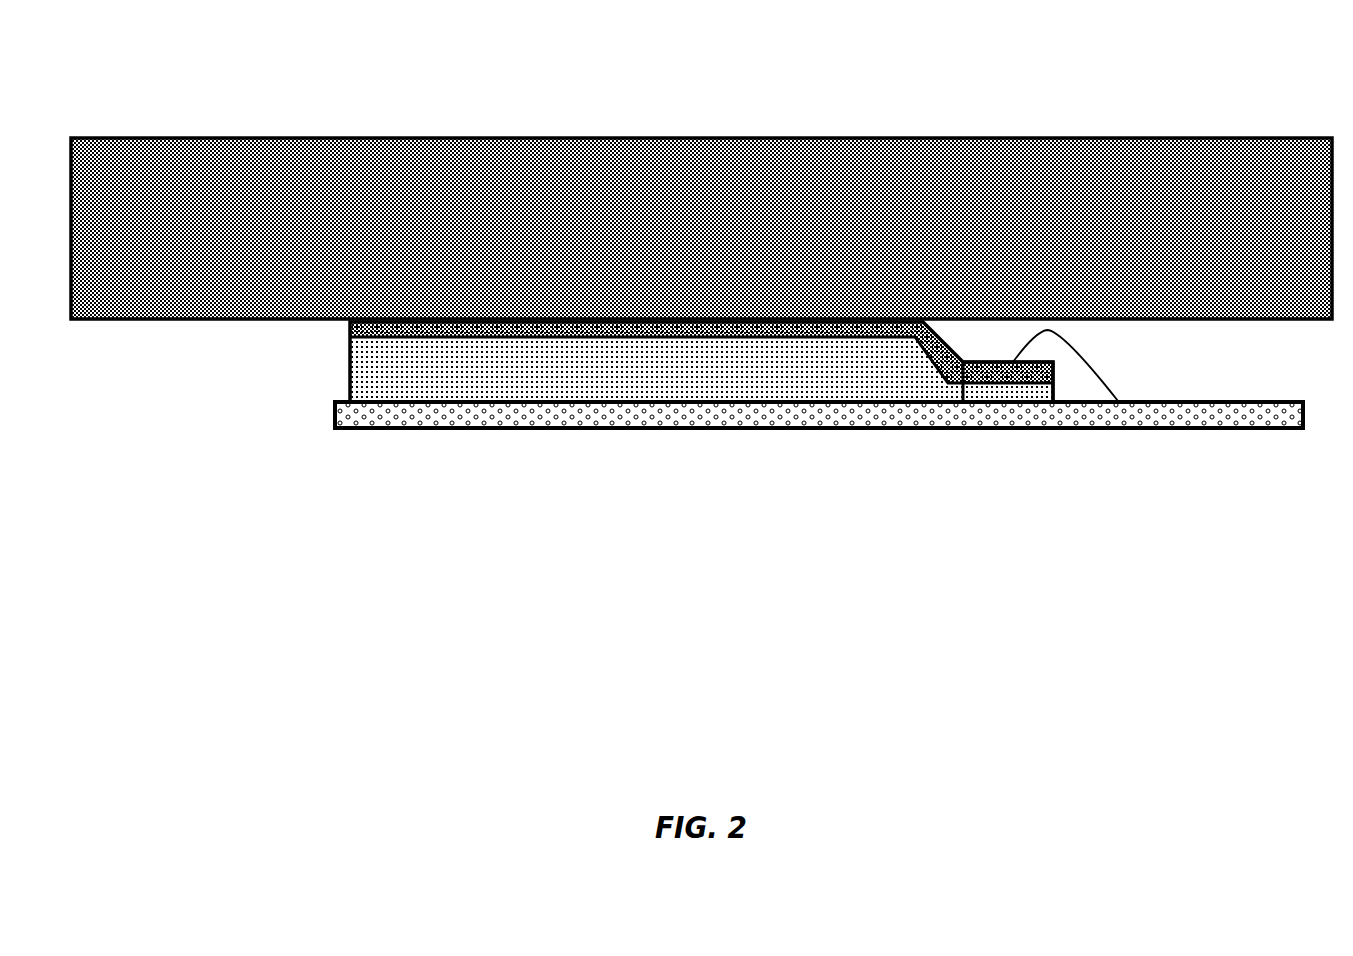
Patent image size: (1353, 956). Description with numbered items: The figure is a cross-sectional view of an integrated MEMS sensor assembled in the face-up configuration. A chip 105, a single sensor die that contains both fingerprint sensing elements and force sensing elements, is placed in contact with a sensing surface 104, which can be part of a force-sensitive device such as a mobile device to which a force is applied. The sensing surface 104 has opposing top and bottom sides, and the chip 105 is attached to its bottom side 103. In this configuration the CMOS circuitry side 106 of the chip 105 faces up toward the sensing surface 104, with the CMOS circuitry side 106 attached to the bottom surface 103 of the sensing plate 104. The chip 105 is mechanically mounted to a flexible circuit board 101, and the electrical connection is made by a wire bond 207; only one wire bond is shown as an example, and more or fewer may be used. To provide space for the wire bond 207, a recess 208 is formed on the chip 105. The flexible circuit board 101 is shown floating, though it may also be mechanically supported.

The flexible circuit board 101 is at (1187, 431).
The bottom side of the sensing surface 103 is at (187, 323).
The sensing surface 104 is at (702, 124).
The chip 105 is at (868, 364).
The CMOS circuitry side 106 is at (588, 343).
The wire bond 207 is at (1090, 364).
The recess 208 is at (982, 333).